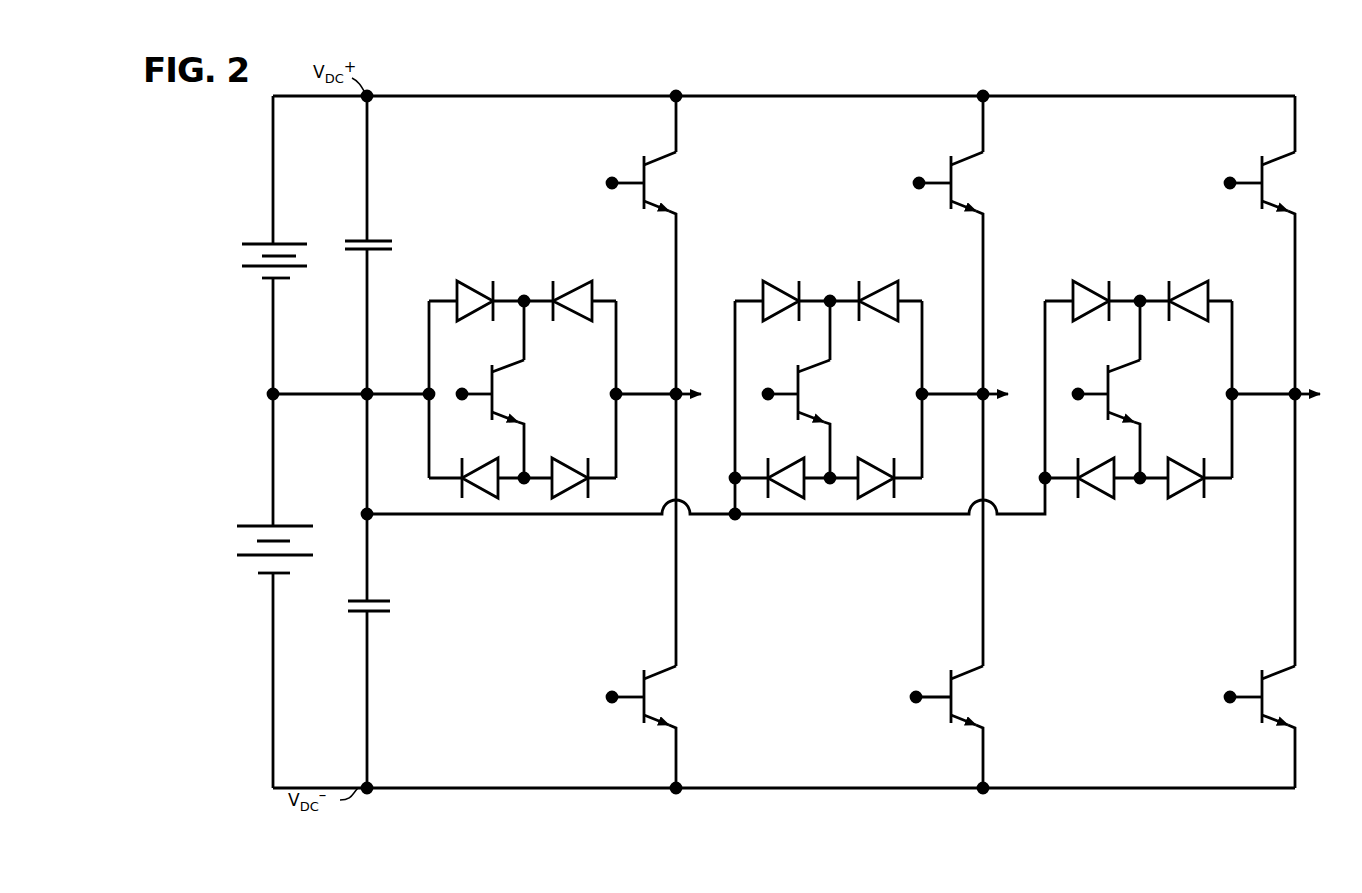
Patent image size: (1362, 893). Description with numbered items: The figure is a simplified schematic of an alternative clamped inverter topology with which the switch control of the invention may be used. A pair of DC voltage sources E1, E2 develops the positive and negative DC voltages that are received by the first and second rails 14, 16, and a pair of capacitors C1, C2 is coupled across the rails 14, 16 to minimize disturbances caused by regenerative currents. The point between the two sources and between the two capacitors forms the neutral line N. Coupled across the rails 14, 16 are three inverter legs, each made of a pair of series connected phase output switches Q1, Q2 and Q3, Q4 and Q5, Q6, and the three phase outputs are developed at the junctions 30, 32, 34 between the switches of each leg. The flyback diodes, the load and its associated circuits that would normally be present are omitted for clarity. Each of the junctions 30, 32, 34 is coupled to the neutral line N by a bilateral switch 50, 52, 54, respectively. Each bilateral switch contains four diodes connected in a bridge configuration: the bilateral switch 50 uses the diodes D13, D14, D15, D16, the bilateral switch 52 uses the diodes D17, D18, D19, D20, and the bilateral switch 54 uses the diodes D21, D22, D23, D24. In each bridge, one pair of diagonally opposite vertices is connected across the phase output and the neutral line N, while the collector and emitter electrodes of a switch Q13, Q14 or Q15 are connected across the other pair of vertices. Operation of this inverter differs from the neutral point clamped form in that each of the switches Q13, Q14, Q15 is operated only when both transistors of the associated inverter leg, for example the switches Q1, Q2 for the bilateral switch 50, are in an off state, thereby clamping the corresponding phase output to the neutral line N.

The first rail 14 is at (745, 96).
The second rail 16 is at (766, 788).
The junction 30 is at (677, 391).
The junction 32 is at (984, 391).
The junction 34 is at (1294, 391).
The bilateral switch 50 is at (496, 370).
The bilateral switch 52 is at (813, 380).
The bilateral switch 54 is at (1116, 396).
The DC voltage source E1 is at (257, 243).
The DC voltage source E2 is at (262, 574).
The capacitor C1 is at (382, 240).
The capacitor C2 is at (374, 612).
The neutral line N is at (333, 393).
The phase output switch Q1 is at (652, 184).
The phase output switch Q2 is at (652, 698).
The phase output switch Q3 is at (959, 184).
The phase output switch Q4 is at (958, 701).
The phase output switch Q5 is at (1270, 184).
The phase output switch Q6 is at (1278, 672).
The switch Q13 is at (500, 398).
The switch Q14 is at (806, 400).
The switch Q15 is at (1116, 398).
The diode D13 is at (468, 286).
The diode D14 is at (577, 287).
The diode D15 is at (490, 463).
The diode D16 is at (592, 445).
The diode D17 is at (778, 286).
The diode D18 is at (885, 287).
The diode D19 is at (796, 463).
The diode D20 is at (870, 468).
The diode D21 is at (1088, 286).
The diode D22 is at (1190, 287).
The diode D23 is at (1098, 490).
The diode D24 is at (1180, 494).